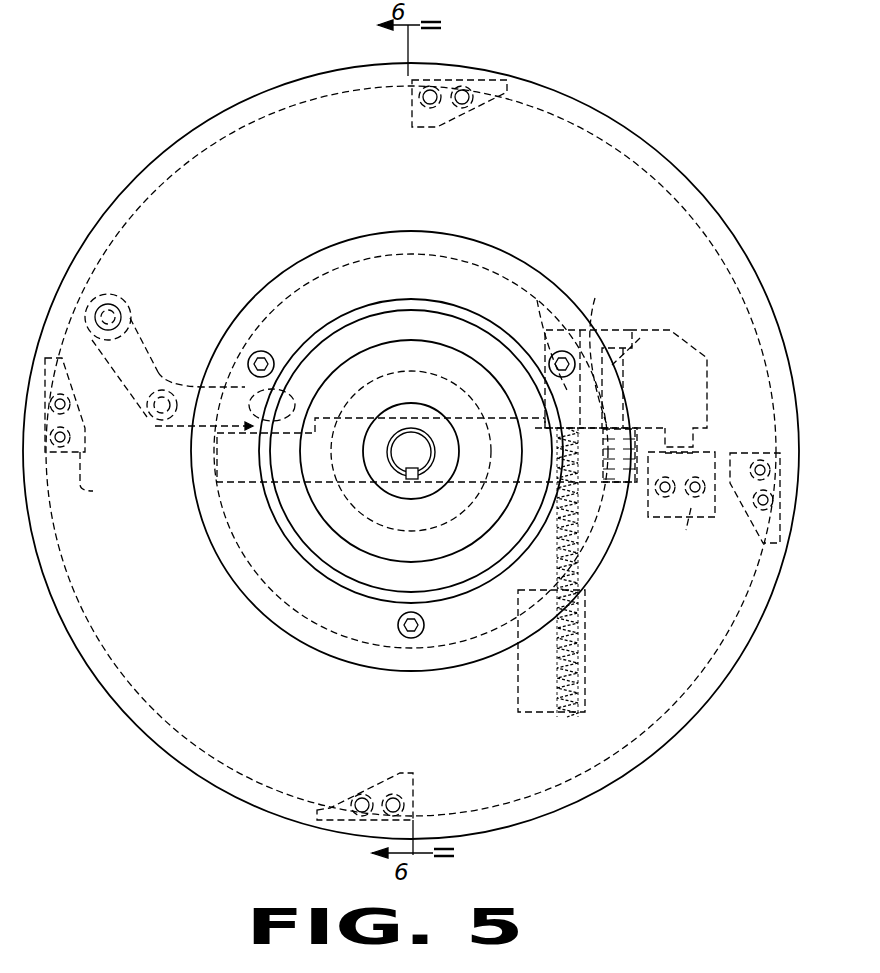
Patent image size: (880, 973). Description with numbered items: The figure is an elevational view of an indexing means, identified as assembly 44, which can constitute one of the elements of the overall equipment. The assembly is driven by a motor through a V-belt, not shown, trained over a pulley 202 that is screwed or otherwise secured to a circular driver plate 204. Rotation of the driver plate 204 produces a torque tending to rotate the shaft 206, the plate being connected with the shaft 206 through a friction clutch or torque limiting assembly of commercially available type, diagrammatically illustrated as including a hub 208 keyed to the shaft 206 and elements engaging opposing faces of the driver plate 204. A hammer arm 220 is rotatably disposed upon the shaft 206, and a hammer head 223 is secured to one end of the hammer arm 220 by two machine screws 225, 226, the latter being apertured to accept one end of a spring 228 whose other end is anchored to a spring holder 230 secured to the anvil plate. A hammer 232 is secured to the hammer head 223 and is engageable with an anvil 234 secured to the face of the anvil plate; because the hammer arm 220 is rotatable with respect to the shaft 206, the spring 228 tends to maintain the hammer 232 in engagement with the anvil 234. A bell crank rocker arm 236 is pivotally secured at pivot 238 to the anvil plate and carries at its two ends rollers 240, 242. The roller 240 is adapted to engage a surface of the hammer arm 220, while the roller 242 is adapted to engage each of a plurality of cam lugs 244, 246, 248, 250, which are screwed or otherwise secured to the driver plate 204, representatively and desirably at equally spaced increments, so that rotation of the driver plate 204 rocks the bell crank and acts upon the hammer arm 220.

The dial assembly 44 is at (651, 106).
The pulley 202 is at (410, 233).
The circular driver plate 204 is at (245, 141).
The shaft 206 is at (410, 437).
The hub 208 is at (412, 494).
The hammer arm 220 is at (203, 517).
The hammer head 223 is at (673, 345).
The machine screw 225 is at (640, 338).
The machine screw 226 is at (592, 318).
The spring 228 is at (586, 630).
The spring holder 230 is at (518, 689).
The hammer 232 is at (708, 428).
The anvil 234 is at (686, 530).
The bell crank rocker arm 236 is at (148, 360).
The pivot 238 is at (160, 437).
The roller 240 is at (172, 370).
The roller 242 is at (123, 295).
The cam lug 244 is at (92, 491).
The cam lug 246 is at (447, 123).
The cam lug 248 is at (698, 449).
The cam lug 250 is at (414, 776).